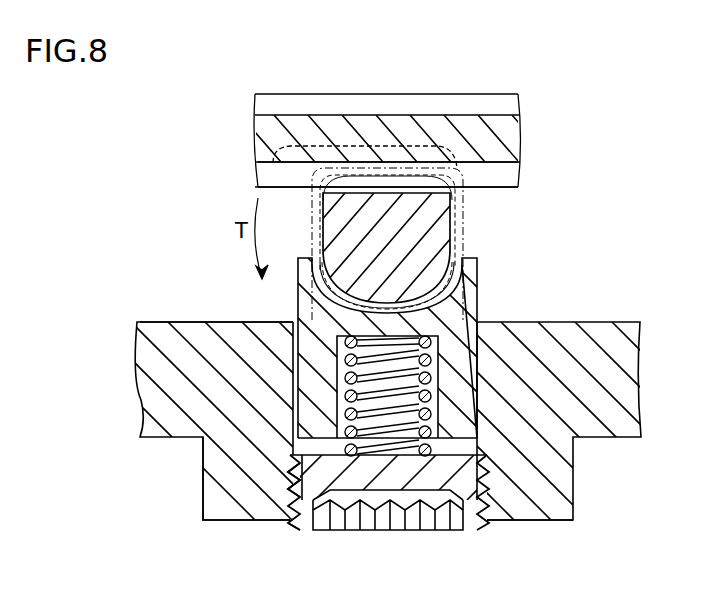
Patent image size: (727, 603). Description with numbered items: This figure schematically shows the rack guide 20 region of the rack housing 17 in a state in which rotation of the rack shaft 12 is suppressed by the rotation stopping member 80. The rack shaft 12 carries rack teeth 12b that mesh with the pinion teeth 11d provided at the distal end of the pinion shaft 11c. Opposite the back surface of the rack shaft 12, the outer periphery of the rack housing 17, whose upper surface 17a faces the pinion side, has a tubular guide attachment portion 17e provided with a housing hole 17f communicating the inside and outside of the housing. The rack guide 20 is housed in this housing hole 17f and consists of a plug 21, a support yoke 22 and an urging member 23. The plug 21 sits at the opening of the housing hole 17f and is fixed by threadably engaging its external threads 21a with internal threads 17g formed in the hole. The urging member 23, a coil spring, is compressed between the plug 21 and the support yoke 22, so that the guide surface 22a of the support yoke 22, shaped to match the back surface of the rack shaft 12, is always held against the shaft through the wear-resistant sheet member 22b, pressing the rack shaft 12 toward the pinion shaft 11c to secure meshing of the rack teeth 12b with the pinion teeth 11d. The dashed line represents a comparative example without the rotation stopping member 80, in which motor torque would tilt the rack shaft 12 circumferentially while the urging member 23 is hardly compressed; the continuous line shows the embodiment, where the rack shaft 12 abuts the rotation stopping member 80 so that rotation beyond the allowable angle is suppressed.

The pinion shaft 11c is at (512, 136).
The pinion teeth 11d is at (497, 178).
The rotation stopping member 80 is at (290, 152).
The rack shaft 12 is at (322, 232).
The rack teeth 12b is at (457, 188).
The support yoke 22 is at (463, 395).
The guide surface 22a is at (445, 294).
The sheet member 22b is at (458, 272).
The urging member 23 is at (443, 423).
The rack housing 17 is at (150, 393).
The bracket upper surface 17a is at (156, 321).
The guide attachment portion 17e is at (203, 487).
The housing hole 17f is at (290, 453).
The internal threads 17g is at (311, 520).
The plug 21 is at (423, 522).
The external threads 21a is at (292, 497).
The rack guide 20 is at (526, 532).